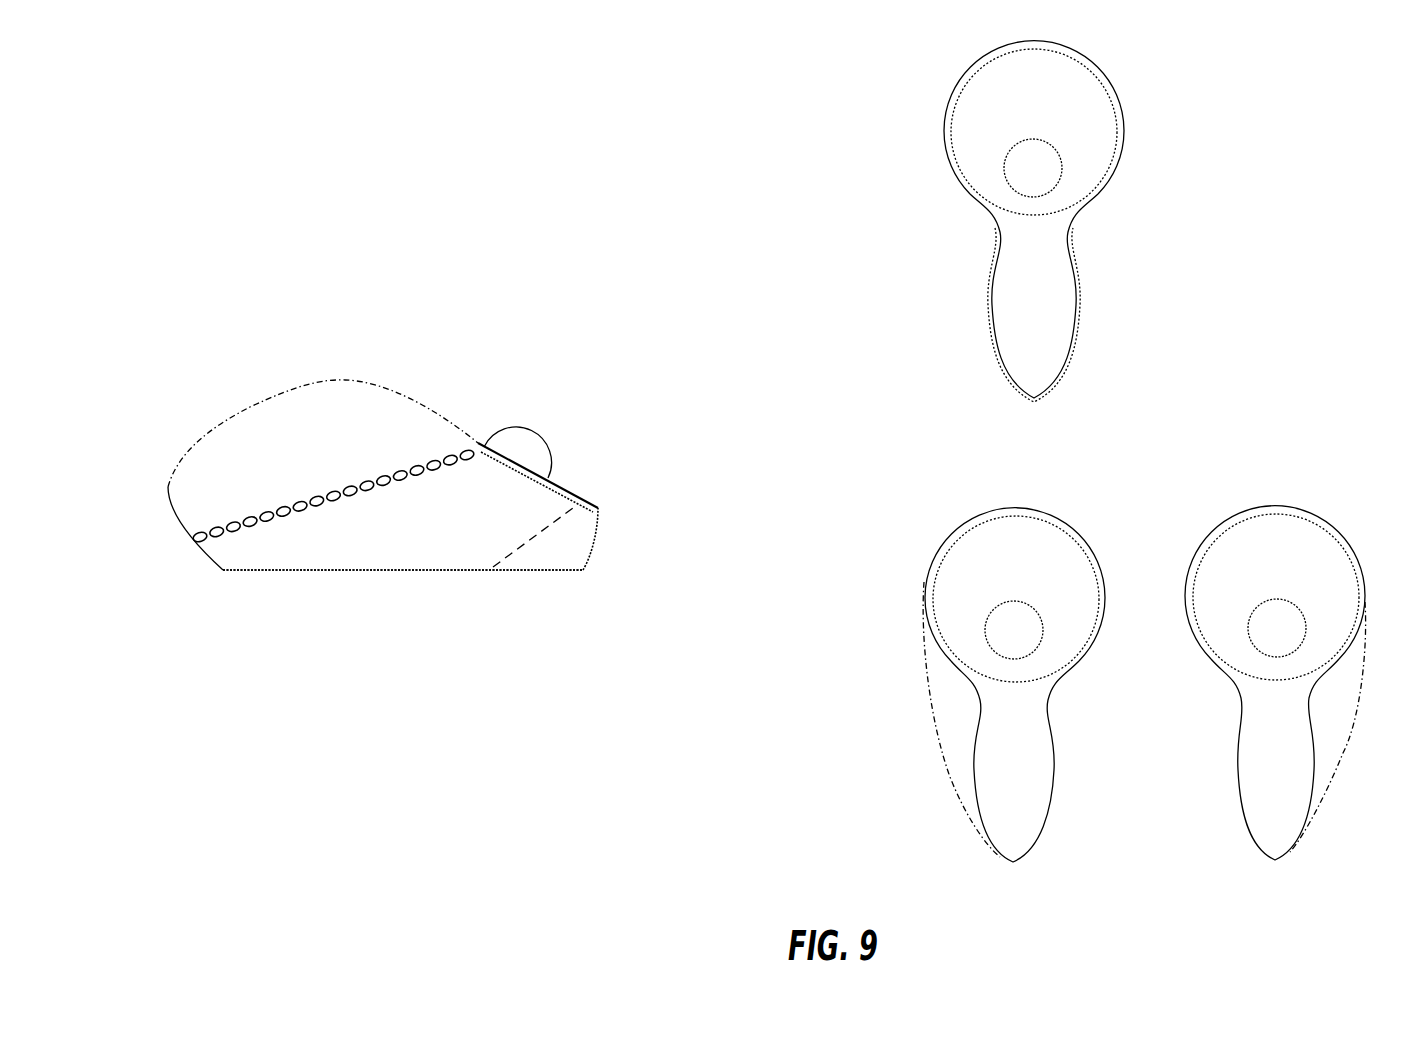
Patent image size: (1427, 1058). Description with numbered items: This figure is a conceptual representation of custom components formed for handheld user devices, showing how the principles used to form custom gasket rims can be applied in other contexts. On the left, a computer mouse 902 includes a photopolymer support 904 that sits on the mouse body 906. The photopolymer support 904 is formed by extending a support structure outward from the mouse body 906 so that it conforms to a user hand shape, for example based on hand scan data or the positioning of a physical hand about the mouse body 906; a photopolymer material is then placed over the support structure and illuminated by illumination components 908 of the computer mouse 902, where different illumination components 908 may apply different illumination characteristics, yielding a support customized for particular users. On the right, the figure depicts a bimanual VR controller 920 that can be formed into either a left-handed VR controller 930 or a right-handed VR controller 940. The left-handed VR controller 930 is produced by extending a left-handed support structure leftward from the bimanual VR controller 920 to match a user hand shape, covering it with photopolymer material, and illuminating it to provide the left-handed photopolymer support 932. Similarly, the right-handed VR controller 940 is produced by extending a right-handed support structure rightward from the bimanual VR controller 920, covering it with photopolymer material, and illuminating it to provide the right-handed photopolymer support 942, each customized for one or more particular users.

The computer mouse 902 is at (185, 574).
The photopolymer support 904 is at (212, 433).
The mouse body 906 is at (403, 572).
The illumination components 908 is at (362, 492).
The bimanual VR controller 920 is at (928, 243).
The left-handed VR controller 930 is at (1057, 854).
The left-handed photopolymer support 932 is at (943, 748).
The right-handed VR controller 940 is at (1230, 842).
The right-handed photopolymer support 942 is at (1340, 767).